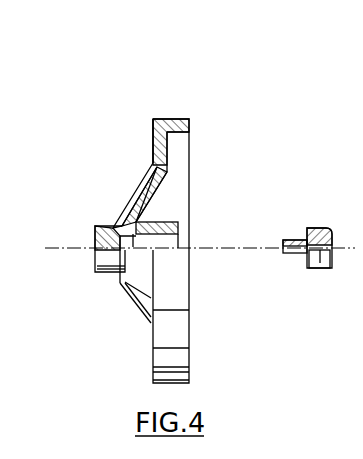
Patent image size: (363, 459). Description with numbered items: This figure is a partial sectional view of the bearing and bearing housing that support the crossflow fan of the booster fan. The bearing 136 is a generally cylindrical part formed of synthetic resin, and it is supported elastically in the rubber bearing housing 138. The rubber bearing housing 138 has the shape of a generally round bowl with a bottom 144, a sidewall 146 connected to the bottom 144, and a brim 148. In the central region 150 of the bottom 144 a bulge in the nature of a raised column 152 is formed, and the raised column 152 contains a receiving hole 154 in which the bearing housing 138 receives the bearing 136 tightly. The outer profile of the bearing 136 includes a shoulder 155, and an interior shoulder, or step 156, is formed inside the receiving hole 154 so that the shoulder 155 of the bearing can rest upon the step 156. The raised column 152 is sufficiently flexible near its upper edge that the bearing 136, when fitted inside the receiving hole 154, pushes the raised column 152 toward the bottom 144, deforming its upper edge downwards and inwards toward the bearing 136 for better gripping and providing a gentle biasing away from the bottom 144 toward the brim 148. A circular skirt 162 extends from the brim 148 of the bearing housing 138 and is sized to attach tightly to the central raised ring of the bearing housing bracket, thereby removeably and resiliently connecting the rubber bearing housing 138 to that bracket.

The rubber bearing housing 138 is at (196, 141).
The circular skirt 162 is at (177, 119).
The brim 148 is at (150, 119).
The sidewall 146 is at (137, 188).
The central region 150 is at (146, 210).
The raised column 152 is at (150, 223).
The receiving hole 154 is at (166, 240).
The bottom 144 is at (118, 226).
The step 156 is at (119, 273).
The bearing 136 is at (320, 264).
The shoulder 155 is at (292, 256).